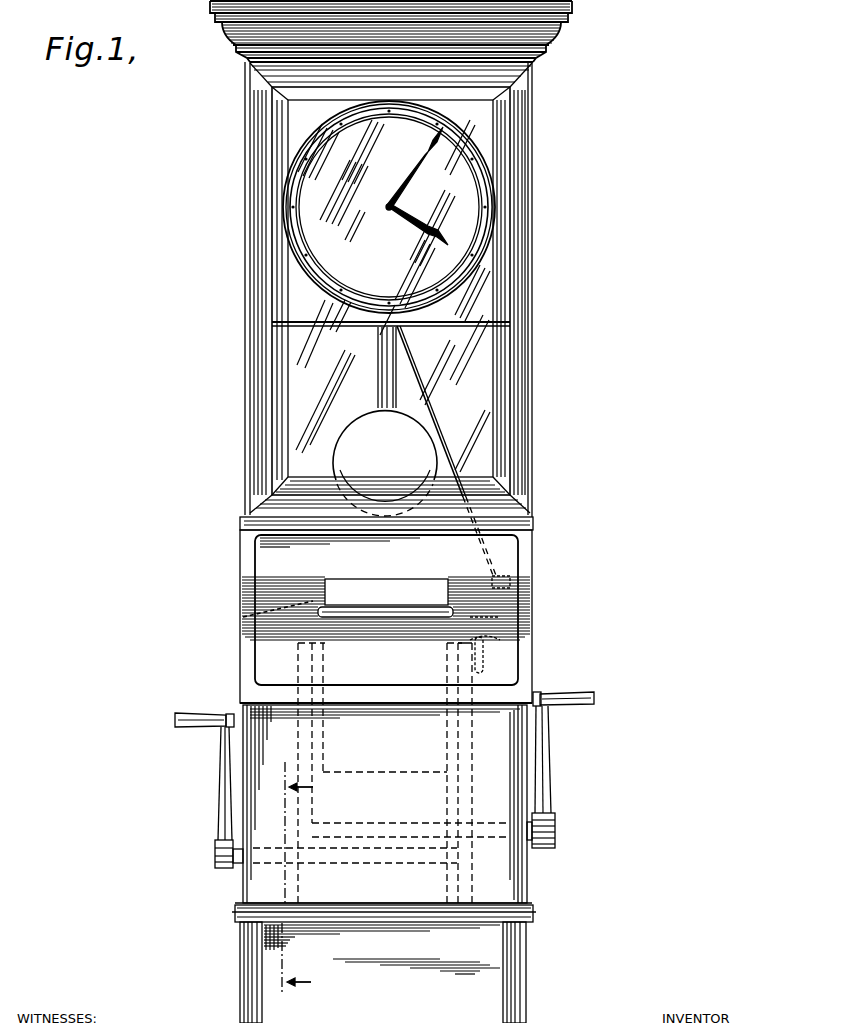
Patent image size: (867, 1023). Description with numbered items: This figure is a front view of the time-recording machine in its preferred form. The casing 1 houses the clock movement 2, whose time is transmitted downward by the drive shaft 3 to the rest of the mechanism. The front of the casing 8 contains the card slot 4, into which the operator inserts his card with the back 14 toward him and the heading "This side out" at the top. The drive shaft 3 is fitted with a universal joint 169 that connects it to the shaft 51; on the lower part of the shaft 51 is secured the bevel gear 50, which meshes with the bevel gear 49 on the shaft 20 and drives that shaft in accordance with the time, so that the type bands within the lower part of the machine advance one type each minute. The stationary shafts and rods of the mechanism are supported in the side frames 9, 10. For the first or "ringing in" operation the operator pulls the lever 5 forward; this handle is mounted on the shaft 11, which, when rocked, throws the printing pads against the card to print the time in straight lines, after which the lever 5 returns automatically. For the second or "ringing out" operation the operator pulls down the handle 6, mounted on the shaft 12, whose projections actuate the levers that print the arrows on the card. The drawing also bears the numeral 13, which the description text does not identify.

The casing 1 is at (523, 173).
The clock movement 2 is at (423, 212).
The drive shaft 3 is at (455, 460).
The card slot 4 is at (417, 608).
The lever 5 is at (196, 728).
The handle 6 is at (582, 703).
The front of the casing 8 is at (242, 556).
The side frame 9 is at (302, 892).
The side frame 10 is at (465, 873).
The shaft 11 is at (240, 868).
The shaft 12 is at (529, 846).
The record strip 13 is at (580, 788).
The back of the card 14 is at (243, 617).
The shaft 20 is at (478, 648).
The bevel gear 49 is at (484, 658).
The bevel gear 50 is at (487, 640).
The shaft 51 is at (487, 617).
The universal joint 169 is at (513, 582).